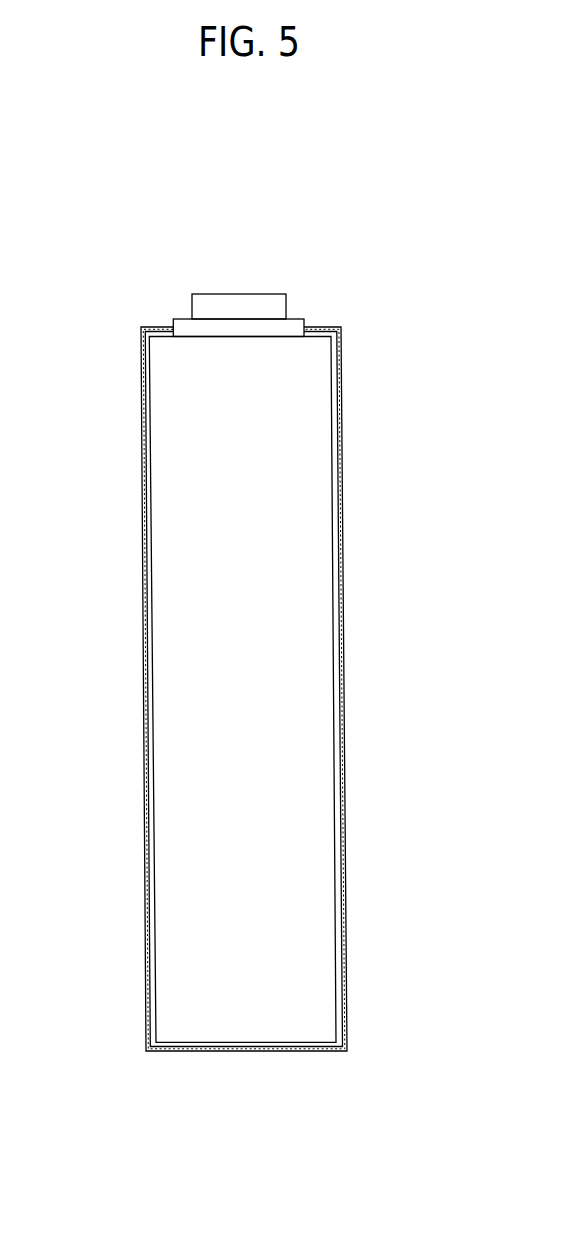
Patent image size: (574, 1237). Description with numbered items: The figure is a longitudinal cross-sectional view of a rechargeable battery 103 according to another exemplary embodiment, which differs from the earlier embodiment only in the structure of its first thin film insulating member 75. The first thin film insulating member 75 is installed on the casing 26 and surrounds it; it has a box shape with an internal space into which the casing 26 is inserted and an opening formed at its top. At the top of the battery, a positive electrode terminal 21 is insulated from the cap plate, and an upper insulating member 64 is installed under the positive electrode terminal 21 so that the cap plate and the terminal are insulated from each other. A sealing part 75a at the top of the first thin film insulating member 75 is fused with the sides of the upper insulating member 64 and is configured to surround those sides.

The rechargeable battery 103 is at (256, 195).
The positive electrode terminal 21 is at (237, 305).
The sealing part 75a is at (305, 320).
The upper insulating member 64 is at (197, 330).
The first thin film insulating member 75 is at (344, 546).
The casing 26 is at (297, 672).